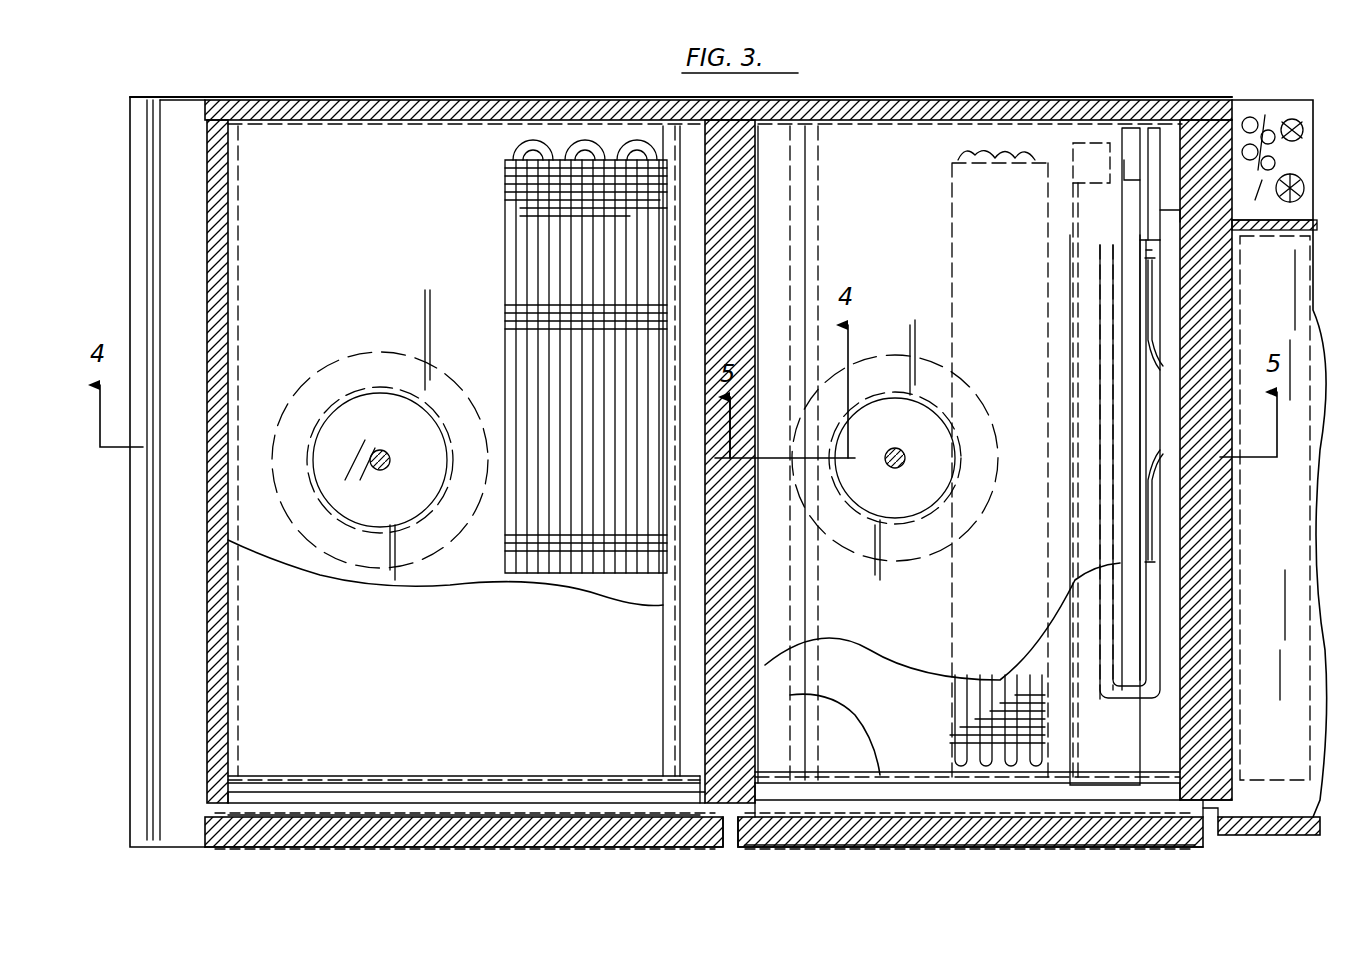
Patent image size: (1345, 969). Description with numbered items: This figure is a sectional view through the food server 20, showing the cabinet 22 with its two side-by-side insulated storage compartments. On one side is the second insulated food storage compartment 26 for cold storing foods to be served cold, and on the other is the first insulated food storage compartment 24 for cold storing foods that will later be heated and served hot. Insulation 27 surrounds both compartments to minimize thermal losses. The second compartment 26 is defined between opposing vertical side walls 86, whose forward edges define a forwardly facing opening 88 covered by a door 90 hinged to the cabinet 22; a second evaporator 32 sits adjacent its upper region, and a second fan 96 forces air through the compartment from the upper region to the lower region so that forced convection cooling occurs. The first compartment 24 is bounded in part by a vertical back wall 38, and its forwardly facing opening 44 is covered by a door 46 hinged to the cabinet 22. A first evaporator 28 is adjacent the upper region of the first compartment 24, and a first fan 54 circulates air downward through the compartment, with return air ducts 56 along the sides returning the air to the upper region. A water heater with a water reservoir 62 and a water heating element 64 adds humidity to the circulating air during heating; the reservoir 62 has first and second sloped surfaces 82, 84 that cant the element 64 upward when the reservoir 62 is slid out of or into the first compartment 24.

The food server 20 is at (500, 75).
The cabinet 22 is at (985, 97).
The first insulated food storage compartment 24 is at (828, 748).
The second insulated food storage compartment 26 is at (372, 745).
The insulation 27 is at (1205, 100).
The first evaporator 28 is at (948, 704).
The second evaporator 32 is at (505, 192).
The vertical back wall 38 is at (885, 124).
The forwardly facing opening 44 is at (920, 812).
The door 46 is at (1000, 848).
The first fan 54 is at (935, 480).
The return air ducts 56 is at (990, 288).
The water reservoir 62 is at (1075, 638).
The water heating element 64 is at (1098, 695).
The first sloped surface 82 is at (1128, 192).
The second sloped surface 84 is at (1135, 130).
The vertical side walls 86 is at (663, 672).
The forwardly facing opening 88 is at (465, 812).
The door 90 is at (605, 848).
The second fan 96 is at (362, 410).